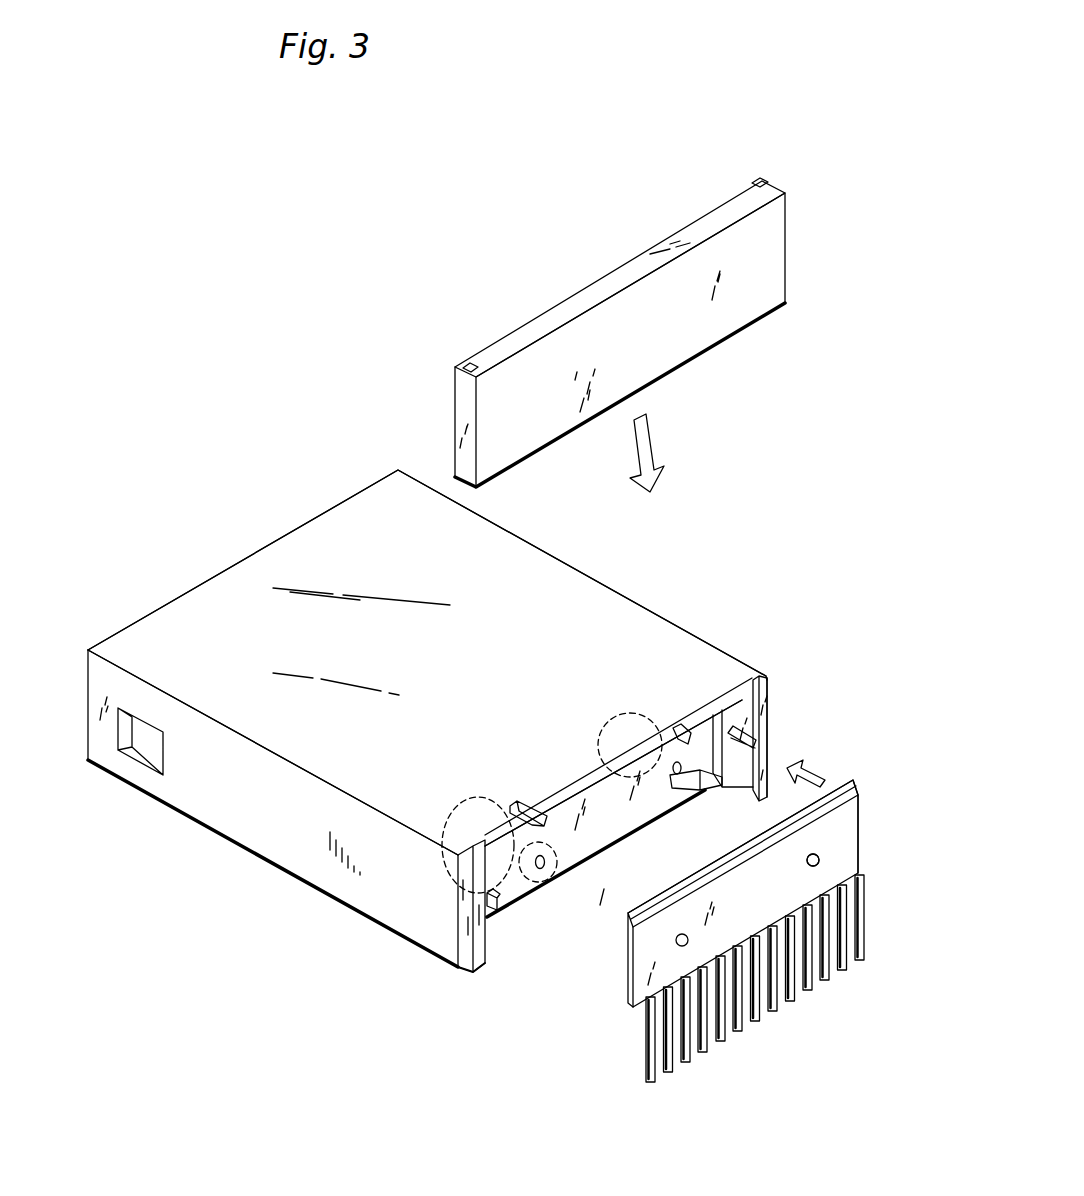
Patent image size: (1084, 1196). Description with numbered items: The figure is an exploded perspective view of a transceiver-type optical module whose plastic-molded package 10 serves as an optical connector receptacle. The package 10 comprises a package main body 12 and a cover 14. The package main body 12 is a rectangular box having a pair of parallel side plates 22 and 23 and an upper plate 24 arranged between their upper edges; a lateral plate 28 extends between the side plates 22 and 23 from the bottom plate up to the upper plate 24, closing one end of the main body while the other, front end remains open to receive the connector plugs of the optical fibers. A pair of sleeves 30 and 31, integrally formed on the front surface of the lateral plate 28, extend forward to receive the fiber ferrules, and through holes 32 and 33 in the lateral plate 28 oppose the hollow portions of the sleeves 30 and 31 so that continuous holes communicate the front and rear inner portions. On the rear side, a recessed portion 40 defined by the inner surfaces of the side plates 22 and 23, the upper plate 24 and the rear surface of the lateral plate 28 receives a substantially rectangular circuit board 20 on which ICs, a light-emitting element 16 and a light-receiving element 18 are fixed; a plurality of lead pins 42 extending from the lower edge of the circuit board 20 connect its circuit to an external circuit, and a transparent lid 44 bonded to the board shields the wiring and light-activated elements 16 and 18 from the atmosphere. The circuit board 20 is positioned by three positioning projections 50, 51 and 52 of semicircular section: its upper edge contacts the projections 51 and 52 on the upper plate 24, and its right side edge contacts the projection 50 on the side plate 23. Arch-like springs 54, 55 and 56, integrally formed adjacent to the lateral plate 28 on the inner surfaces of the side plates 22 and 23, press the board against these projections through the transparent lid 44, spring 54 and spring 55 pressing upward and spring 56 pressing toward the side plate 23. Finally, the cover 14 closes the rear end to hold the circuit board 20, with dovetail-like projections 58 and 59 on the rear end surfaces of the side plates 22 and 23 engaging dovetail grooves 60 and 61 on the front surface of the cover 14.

The package 10 is at (302, 492).
The package main body 12 is at (232, 583).
The cover 14 is at (625, 262).
The light-emitting element 16 is at (676, 944).
The light-receiving element 18 is at (822, 862).
The circuit board 20 is at (860, 840).
The side plate 22 is at (320, 860).
The side plate 23 is at (772, 747).
The upper plate 24 is at (143, 643).
The lateral plate 28 is at (587, 840).
The sleeve 30 is at (460, 806).
The sleeve 31 is at (597, 730).
The through hole 32 is at (540, 869).
The through hole 33 is at (673, 775).
The recessed portion 40 is at (577, 812).
The lead pins 42 is at (862, 938).
The transparent lid 44 is at (768, 822).
The positioning projection 50 is at (760, 730).
The positioning projection 51 is at (516, 804).
The positioning projection 52 is at (662, 726).
The spring 54 is at (702, 790).
The spring 55 is at (494, 910).
The spring 56 is at (455, 868).
The dovetail-like projection 58 is at (480, 975).
The dovetail-like projection 59 is at (766, 700).
The dovetail groove 60 is at (468, 360).
The dovetail groove 61 is at (762, 179).